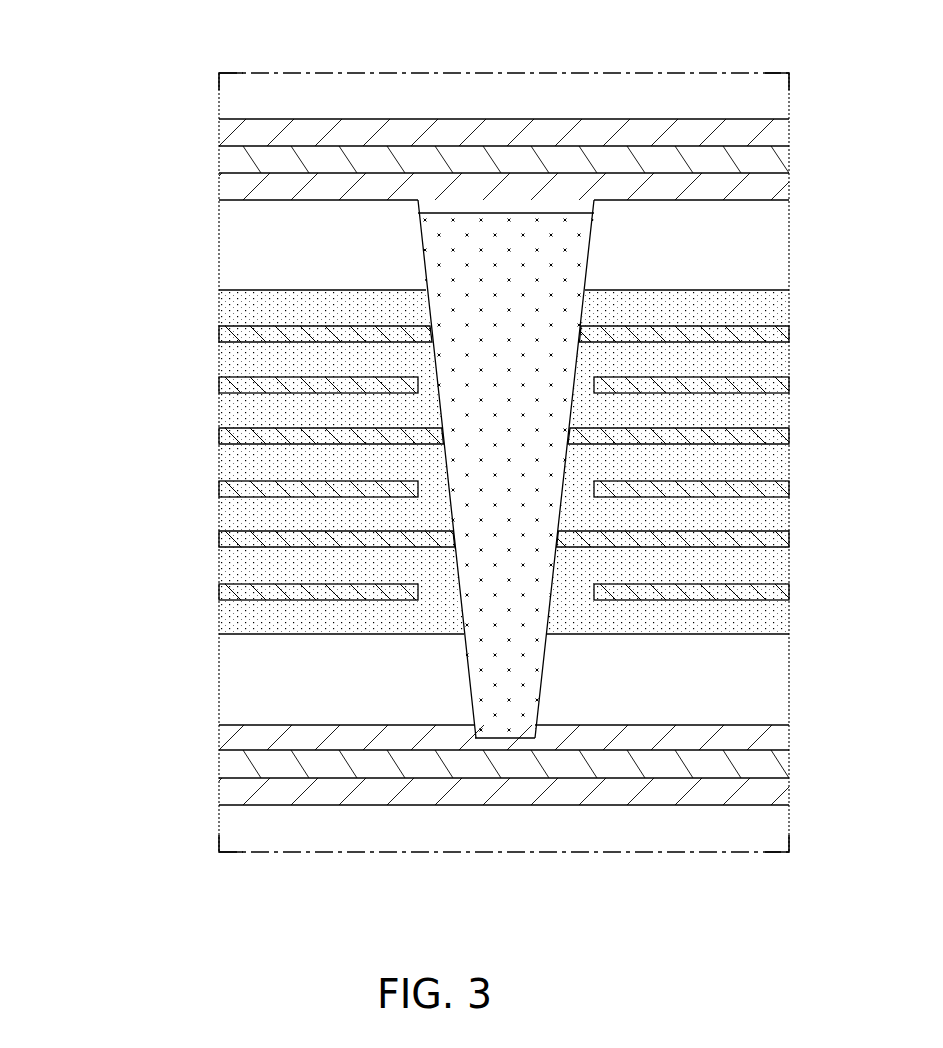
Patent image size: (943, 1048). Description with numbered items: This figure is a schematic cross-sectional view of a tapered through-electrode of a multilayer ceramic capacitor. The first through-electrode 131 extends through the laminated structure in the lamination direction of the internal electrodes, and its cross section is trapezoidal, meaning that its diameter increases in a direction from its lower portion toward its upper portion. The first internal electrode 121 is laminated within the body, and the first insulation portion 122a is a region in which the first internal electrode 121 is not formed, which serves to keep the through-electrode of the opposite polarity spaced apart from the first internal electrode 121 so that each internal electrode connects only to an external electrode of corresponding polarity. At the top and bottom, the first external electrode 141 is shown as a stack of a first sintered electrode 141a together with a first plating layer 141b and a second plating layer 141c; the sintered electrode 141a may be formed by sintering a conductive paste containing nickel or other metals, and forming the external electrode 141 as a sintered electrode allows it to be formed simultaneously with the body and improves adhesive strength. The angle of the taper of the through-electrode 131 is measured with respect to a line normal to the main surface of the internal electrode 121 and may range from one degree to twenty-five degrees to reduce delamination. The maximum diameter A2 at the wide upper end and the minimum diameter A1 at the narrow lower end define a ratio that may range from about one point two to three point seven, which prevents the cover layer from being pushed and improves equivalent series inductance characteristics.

The first internal electrode 121 is at (205, 542).
The first insulation portion 122a is at (432, 593).
The first through-electrode 131 is at (475, 237).
The first external electrode 141 is at (131, 102).
The first sintered electrode 141a is at (219, 178).
The first plating layer 141b is at (219, 157).
The second plating layer 141c is at (219, 120).
The minimum diameter A1 is at (475, 738).
The maximum diameter A2 is at (594, 213).